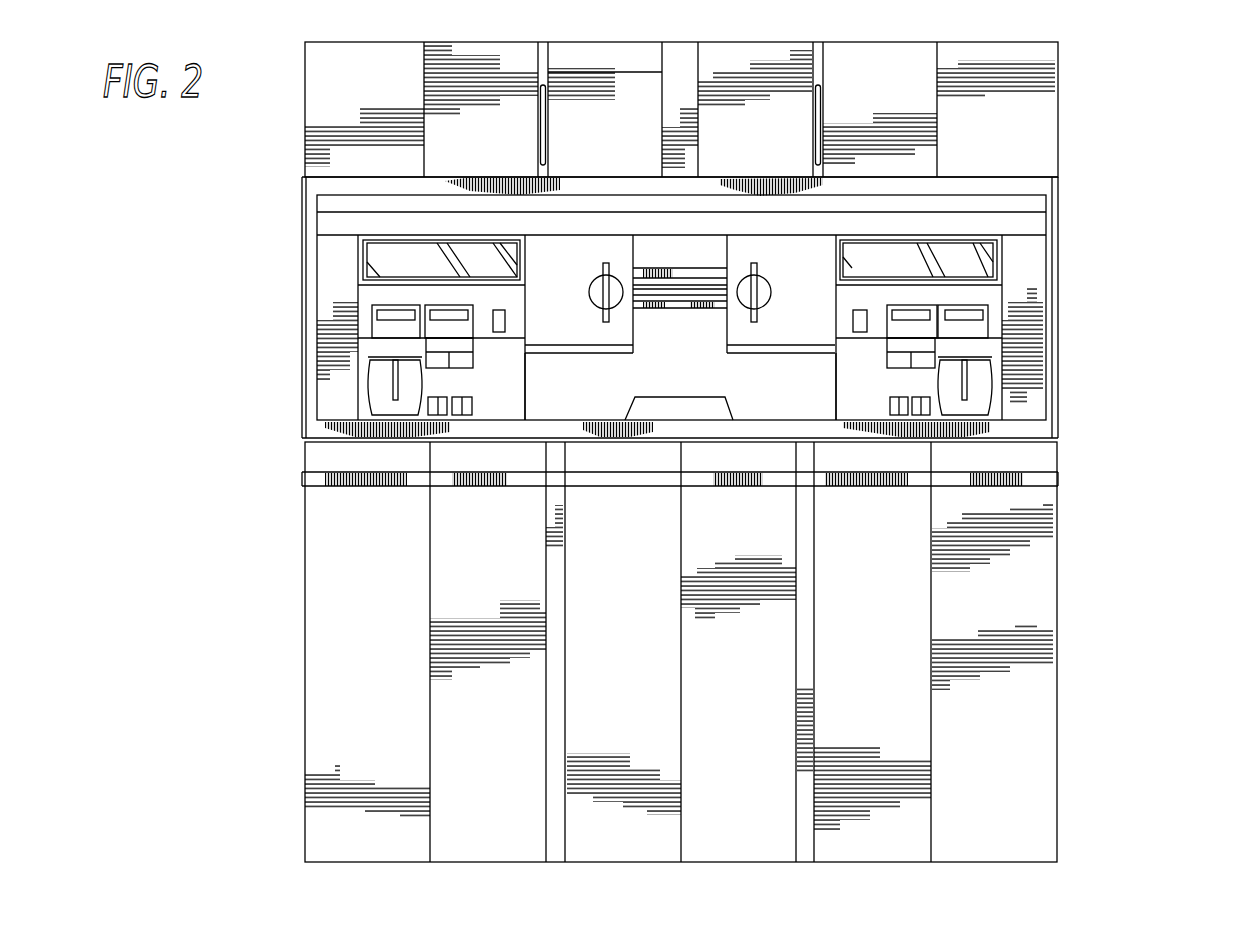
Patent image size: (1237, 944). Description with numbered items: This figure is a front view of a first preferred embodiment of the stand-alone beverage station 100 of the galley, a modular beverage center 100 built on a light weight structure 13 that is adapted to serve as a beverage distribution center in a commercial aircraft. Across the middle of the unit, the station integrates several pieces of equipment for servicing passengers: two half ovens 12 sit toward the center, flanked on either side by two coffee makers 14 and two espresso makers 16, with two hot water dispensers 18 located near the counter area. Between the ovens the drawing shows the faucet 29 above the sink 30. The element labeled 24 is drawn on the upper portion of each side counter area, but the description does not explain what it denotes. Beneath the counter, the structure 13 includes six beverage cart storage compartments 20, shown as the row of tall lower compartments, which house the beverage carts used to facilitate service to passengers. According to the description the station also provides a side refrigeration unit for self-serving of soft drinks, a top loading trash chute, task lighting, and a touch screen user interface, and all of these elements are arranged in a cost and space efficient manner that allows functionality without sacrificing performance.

The stand-alone beverage station 100 is at (1083, 162).
The half oven 12 is at (548, 277).
The light weight structure 13 is at (1057, 580).
The coffee maker 14 is at (378, 330).
The espresso maker 16 is at (432, 305).
The hot water dispenser 18 is at (515, 320).
The beverage cart storage compartment 20 is at (373, 703).
The window panel 24 is at (378, 257).
The faucet 29 is at (685, 312).
The sink 30 is at (682, 397).